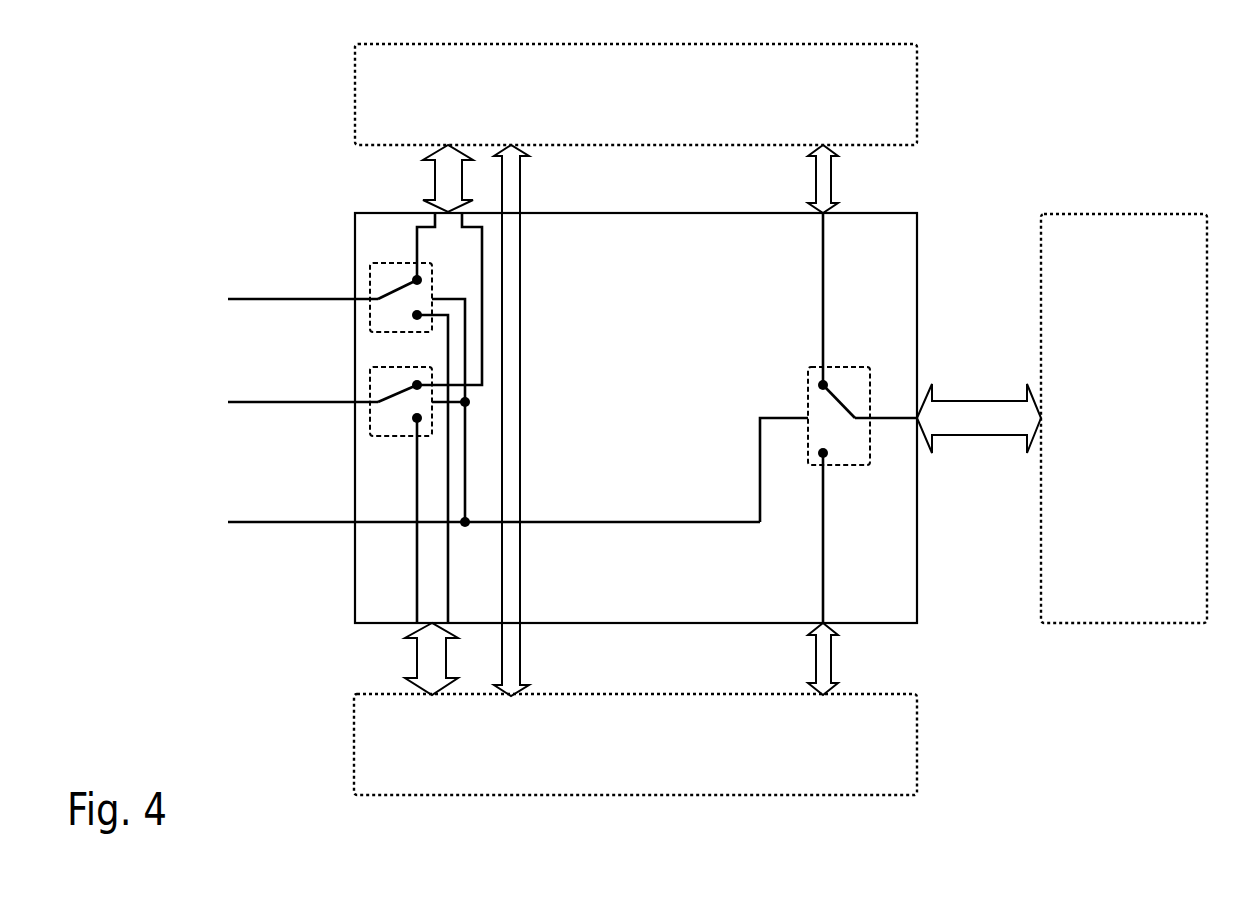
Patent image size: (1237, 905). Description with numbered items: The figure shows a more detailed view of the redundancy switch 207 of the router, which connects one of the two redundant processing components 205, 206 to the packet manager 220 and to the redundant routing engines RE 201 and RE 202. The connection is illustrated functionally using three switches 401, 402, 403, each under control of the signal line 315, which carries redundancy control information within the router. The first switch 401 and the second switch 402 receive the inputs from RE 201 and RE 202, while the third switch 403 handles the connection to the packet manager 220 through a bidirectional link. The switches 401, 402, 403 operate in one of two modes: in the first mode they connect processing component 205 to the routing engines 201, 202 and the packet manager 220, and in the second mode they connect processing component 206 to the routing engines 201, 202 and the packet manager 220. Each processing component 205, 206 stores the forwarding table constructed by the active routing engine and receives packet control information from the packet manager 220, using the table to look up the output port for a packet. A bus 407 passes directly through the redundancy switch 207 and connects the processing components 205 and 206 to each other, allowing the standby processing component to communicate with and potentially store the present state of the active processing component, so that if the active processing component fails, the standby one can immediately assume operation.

The processing component 205 is at (636, 82).
The processing component 206 is at (635, 731).
The redundancy switch 207 is at (698, 420).
The packet manager 220 is at (1125, 406).
The switch 401 is at (397, 286).
The switch 402 is at (397, 390).
The switch 403 is at (802, 367).
The bus 407 is at (525, 283).
The routing engine 201 is at (278, 286).
The routing engine 202 is at (275, 385).
The signal line 315 is at (479, 511).